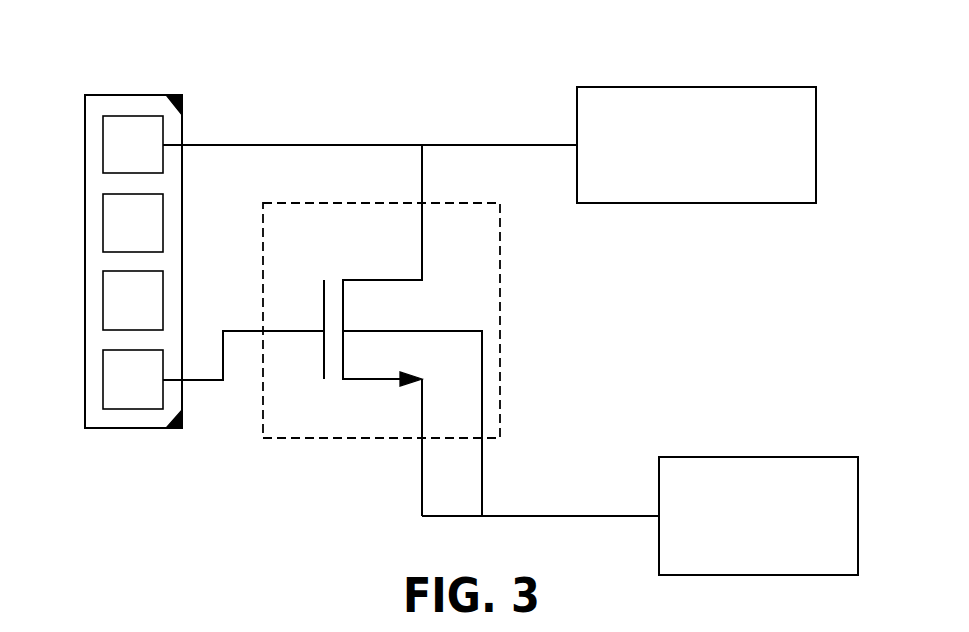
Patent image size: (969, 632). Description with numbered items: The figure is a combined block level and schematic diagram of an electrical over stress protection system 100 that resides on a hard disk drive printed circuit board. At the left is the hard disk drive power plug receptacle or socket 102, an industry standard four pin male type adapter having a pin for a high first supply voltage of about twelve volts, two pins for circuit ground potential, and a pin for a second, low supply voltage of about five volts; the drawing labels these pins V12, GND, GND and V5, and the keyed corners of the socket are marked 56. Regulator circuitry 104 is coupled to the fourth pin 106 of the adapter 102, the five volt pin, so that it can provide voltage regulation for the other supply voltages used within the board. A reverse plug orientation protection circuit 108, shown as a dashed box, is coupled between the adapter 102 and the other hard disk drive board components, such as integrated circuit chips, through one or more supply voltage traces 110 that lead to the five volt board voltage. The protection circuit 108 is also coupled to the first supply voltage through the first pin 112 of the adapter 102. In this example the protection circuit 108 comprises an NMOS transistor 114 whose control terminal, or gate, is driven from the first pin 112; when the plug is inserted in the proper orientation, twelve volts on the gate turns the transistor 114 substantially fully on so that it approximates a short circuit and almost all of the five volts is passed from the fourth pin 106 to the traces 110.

The electrical over stress protection system 100 is at (604, 52).
The power plug receptacle or socket 102 is at (125, 428).
The regulator circuitry 104 is at (738, 203).
The fourth pin 106 is at (182, 145).
The reverse plug orientation protection circuit 108 is at (500, 300).
The supply voltage traces 110 is at (540, 516).
The first pin 112 is at (182, 380).
The NMOS transistor 114 is at (413, 282).
The connector key 56 is at (173, 95).